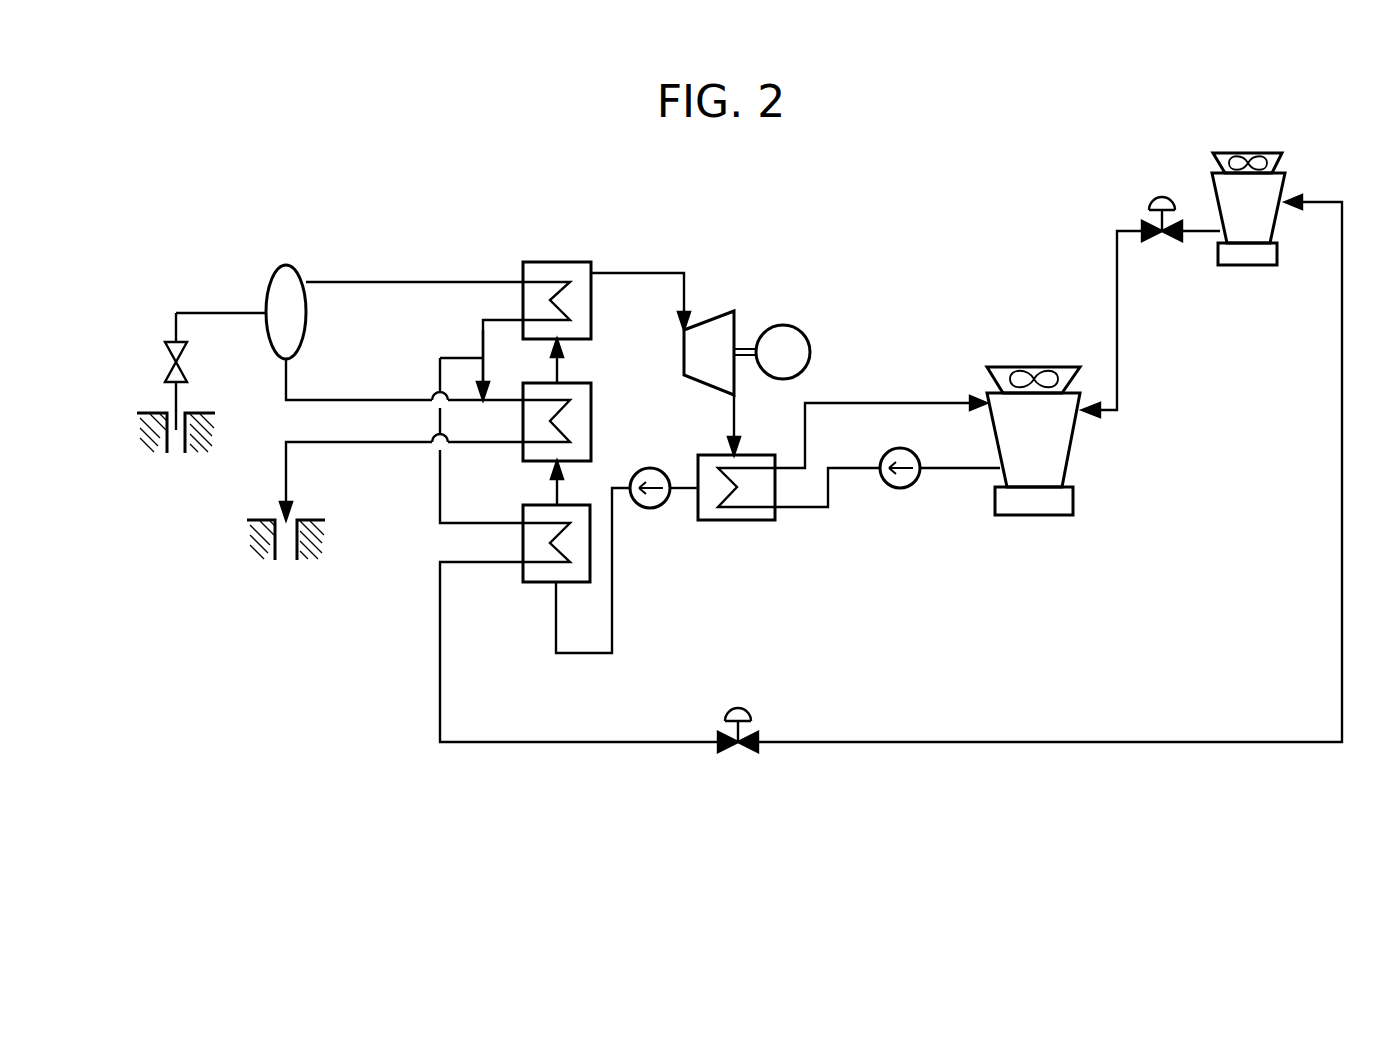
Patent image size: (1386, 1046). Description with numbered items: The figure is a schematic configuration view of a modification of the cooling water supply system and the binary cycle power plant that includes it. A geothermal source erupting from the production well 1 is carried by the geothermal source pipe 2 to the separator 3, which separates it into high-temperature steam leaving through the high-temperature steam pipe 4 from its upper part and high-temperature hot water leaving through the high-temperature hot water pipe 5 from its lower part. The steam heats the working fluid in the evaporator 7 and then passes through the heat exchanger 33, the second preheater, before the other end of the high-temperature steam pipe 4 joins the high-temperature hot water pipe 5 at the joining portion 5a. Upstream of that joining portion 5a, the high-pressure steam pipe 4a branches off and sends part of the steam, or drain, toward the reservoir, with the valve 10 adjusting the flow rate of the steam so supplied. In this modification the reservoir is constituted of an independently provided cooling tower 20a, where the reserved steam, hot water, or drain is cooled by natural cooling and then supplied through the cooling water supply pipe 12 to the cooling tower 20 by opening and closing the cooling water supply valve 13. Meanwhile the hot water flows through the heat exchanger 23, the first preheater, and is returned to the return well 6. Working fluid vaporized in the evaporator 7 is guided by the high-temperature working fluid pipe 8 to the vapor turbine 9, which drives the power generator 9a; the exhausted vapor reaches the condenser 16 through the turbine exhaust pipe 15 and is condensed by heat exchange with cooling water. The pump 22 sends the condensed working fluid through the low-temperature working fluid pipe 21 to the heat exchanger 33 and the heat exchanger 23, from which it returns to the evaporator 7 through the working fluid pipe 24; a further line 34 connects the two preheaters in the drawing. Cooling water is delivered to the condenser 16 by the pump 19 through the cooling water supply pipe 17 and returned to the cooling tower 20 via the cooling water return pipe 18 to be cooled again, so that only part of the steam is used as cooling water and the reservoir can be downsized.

The production well 1 is at (130, 325).
The geothermal source pipe 2 is at (224, 313).
The separator 3 is at (283, 265).
The high-temperature steam pipe 4 is at (348, 282).
The high-pressure steam pipe 4a is at (440, 358).
The high-temperature hot water pipe 5 is at (355, 400).
The joining portion 5a is at (487, 400).
The return well 6 is at (258, 490).
The evaporator 7 is at (548, 262).
The high-temperature working fluid pipe 8 is at (622, 273).
The vapor turbine 9 is at (707, 322).
The power generator 9a is at (810, 352).
The valve 10 is at (737, 705).
The cooling water supply pipe 12 is at (1117, 340).
The cooling water supply valve 13 is at (1168, 243).
The turbine exhaust pipe 15 is at (734, 415).
The condenser 16 is at (730, 520).
The cooling water supply pipe 17 is at (807, 507).
The cooling water return pipe 18 is at (937, 403).
The pump 19 is at (896, 488).
The cooling tower 20 is at (1075, 442).
The cooling tower 20a is at (1252, 265).
The low-temperature working fluid pipe 21 is at (683, 488).
The pump 22 is at (648, 508).
The heat exchanger 23 is at (591, 395).
The working fluid pipe 24 is at (557, 363).
The heat exchanger 33 is at (530, 582).
The working medium line 34 is at (557, 490).